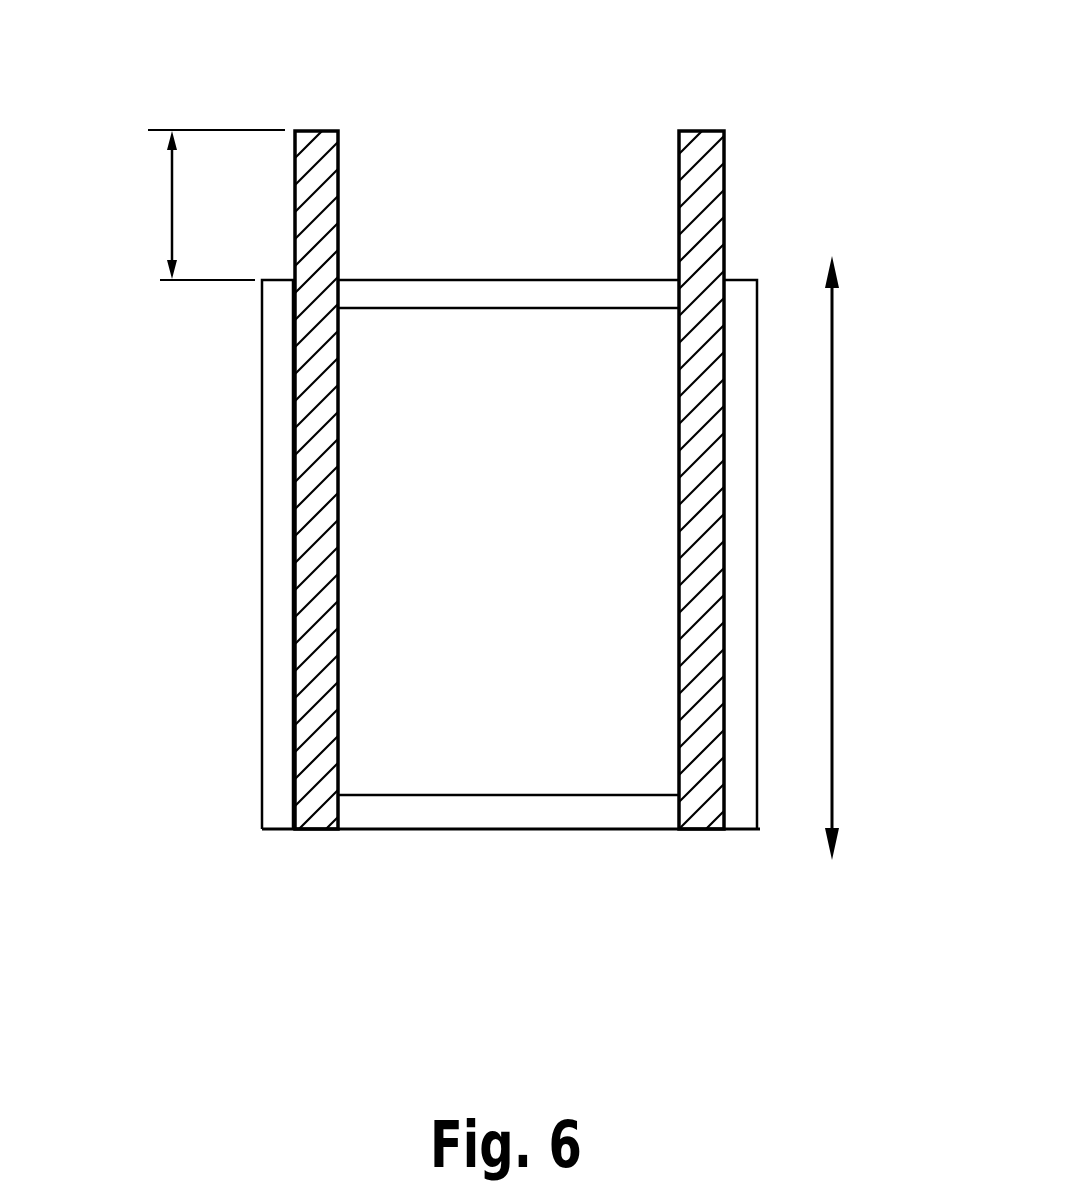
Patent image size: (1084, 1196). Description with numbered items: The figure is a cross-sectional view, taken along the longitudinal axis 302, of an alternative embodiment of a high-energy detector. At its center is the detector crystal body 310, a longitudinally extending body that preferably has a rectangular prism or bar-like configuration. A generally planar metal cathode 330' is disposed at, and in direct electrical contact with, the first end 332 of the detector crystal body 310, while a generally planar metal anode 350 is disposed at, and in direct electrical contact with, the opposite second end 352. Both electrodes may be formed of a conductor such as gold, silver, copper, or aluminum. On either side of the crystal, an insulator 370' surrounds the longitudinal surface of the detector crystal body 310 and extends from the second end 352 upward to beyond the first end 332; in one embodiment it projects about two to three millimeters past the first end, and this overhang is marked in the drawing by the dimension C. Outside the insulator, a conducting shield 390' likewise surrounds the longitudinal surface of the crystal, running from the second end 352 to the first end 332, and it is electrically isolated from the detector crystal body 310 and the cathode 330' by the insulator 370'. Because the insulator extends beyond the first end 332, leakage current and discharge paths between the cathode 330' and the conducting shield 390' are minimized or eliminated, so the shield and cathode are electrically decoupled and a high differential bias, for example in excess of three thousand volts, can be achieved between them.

The longitudinal axis 302 is at (834, 526).
The detector crystal body 310 is at (528, 551).
The cathode 330' is at (508, 263).
The first end 332 is at (451, 240).
The anode 350 is at (572, 815).
The second end 352 is at (417, 832).
The insulator 370' is at (527, 471).
The conducting shield 390' is at (497, 615).
The height dimension C is at (215, 205).